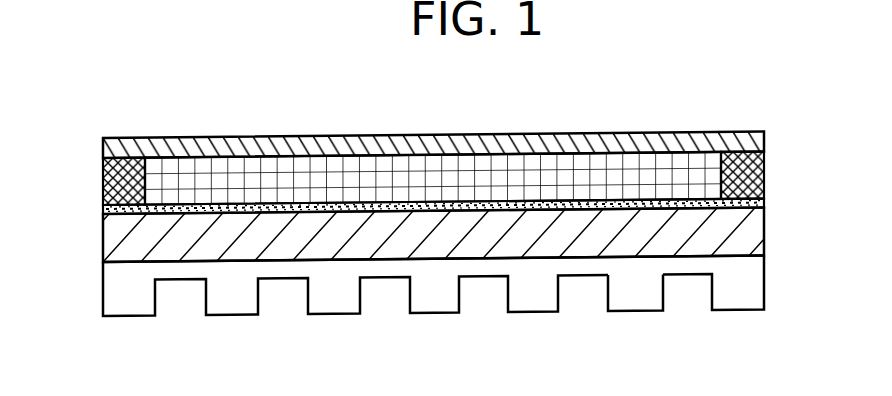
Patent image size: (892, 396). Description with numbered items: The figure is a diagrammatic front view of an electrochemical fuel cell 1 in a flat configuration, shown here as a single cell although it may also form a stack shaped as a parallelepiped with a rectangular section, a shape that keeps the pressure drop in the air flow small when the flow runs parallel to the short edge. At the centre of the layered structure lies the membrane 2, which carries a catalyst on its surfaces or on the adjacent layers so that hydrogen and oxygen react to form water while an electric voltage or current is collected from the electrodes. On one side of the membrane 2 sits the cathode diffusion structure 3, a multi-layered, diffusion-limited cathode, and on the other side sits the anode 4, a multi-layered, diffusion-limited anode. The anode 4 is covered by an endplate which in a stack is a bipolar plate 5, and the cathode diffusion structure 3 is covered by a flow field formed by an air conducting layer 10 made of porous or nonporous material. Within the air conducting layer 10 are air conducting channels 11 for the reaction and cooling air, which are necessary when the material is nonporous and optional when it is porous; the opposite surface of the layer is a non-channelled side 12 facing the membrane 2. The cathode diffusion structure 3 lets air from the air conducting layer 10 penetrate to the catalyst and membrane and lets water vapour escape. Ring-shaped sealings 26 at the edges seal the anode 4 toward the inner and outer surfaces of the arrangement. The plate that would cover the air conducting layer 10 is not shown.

The electrochemical fuel cell 1 is at (545, 108).
The membrane 2 is at (765, 205).
The cathode diffusion structure 3 is at (745, 241).
The anode 4 is at (636, 160).
The bipolar plate 5 is at (752, 147).
The air conducting layer 10 is at (750, 292).
The air conducting channels 11 is at (587, 303).
The non-channelled side 12 is at (130, 240).
The ring-shaped sealings 26 is at (120, 185).